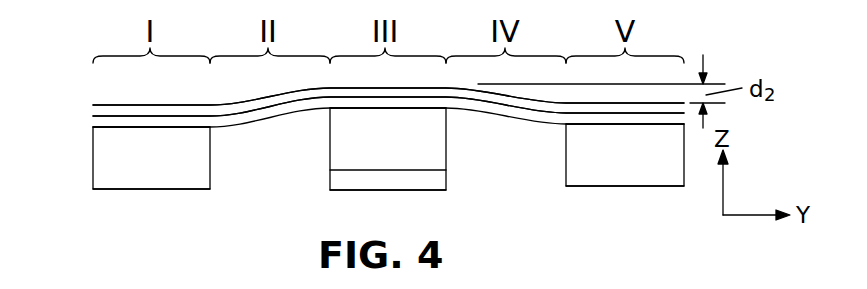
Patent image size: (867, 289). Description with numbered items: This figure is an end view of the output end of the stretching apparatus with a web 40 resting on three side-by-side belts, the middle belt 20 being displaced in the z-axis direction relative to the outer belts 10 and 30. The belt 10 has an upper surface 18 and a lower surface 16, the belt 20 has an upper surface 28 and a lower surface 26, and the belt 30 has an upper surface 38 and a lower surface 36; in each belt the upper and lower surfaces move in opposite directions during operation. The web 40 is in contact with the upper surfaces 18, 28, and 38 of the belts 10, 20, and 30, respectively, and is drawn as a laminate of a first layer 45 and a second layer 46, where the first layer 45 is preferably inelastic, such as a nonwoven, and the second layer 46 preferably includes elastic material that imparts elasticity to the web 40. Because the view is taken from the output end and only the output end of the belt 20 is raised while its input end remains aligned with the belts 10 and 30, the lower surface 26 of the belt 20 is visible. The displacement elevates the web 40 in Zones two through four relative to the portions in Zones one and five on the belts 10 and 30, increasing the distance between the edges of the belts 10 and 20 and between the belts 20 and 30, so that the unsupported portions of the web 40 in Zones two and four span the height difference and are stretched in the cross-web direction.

The belt 10 is at (93, 160).
The lower surface of belt 10 16 is at (145, 189).
The upper surface of belt 10 18 is at (170, 128).
The belt 20 is at (330, 143).
The lower surface of belt 20 26 is at (375, 189).
The upper surface of belt 20 28 is at (385, 108).
The belt 30 is at (566, 158).
The lower surface of belt 30 36 is at (622, 186).
The upper surface of belt 30 38 is at (620, 124).
The web 40 is at (80, 105).
The first layer 45 is at (111, 107).
The second layer 46 is at (134, 118).